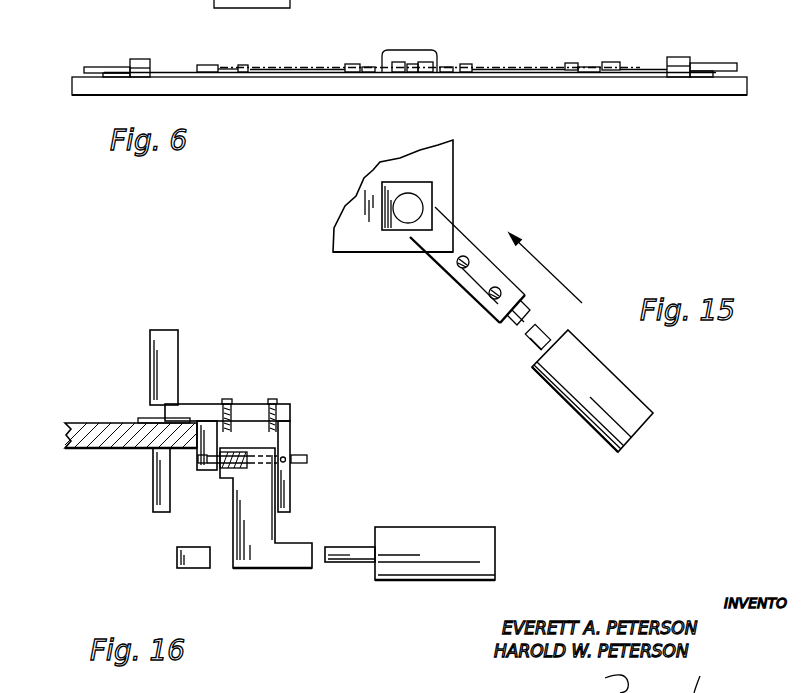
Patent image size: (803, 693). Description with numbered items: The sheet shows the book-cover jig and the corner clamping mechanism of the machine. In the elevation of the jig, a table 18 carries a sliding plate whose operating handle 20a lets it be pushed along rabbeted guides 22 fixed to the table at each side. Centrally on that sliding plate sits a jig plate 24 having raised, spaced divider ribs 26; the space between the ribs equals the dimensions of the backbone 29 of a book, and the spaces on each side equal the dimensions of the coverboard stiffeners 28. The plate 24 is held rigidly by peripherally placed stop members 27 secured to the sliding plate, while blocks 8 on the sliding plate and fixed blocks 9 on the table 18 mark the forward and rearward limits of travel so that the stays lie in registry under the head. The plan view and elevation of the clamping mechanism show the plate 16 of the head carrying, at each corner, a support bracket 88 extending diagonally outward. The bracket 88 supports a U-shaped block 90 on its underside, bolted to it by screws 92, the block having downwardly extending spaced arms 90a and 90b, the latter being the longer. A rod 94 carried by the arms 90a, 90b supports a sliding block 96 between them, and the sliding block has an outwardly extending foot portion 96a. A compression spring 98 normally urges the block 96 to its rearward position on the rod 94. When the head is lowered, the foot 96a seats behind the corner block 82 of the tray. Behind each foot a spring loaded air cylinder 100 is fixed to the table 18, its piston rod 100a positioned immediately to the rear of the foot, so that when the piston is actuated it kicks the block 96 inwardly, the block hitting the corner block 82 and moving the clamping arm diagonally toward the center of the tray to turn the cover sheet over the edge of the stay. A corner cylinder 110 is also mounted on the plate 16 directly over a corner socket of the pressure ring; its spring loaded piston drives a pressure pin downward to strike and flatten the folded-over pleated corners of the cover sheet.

In FIG. 6, the block 8 is at (144, 61).
In FIG. 6, the fixed block 9 is at (140, 78).
In FIG. 6, the table 18 is at (96, 87).
In FIG. 6, the operating handle 20a is at (399, 49).
In FIG. 6, the rabbeted guide 22 is at (101, 66).
In FIG. 6, the plate 24 is at (318, 78).
In FIG. 6, the divider rib 26 is at (352, 63).
In FIG. 6, the stop member 27 is at (208, 64).
In FIG. 6, the coverboard stiffener 28 is at (301, 66).
In FIG. 6, the backbone 29 is at (414, 62).
In FIG. 15, the plate 16 is at (441, 157).
In FIG. 16, the plate 16 is at (116, 432).
In FIG. 16, the corner block 82 is at (200, 572).
In FIG. 15, the support bracket 88 is at (462, 276).
In FIG. 16, the support bracket 88 is at (280, 413).
In FIG. 16, the U-shaped block 90 is at (214, 420).
In FIG. 16, the arm 90a is at (200, 458).
In FIG. 16, the arm 90b is at (290, 492).
In FIG. 16, the screw 92 is at (268, 399).
In FIG. 16, the rod 94 is at (308, 458).
In FIG. 15, the sliding block 96 is at (523, 311).
In FIG. 16, the sliding block 96 is at (262, 535).
In FIG. 16, the foot portion 96a is at (284, 571).
In FIG. 16, the compression spring 98 is at (229, 470).
In FIG. 15, the spring loaded air cylinder 100 is at (594, 369).
In FIG. 16, the spring loaded air cylinder 100 is at (430, 530).
In FIG. 15, the piston rod 100a is at (536, 343).
In FIG. 16, the piston rod 100a is at (360, 558).
In FIG. 15, the corner cylinder 110 is at (405, 212).
In FIG. 16, the corner cylinder 110 is at (170, 343).